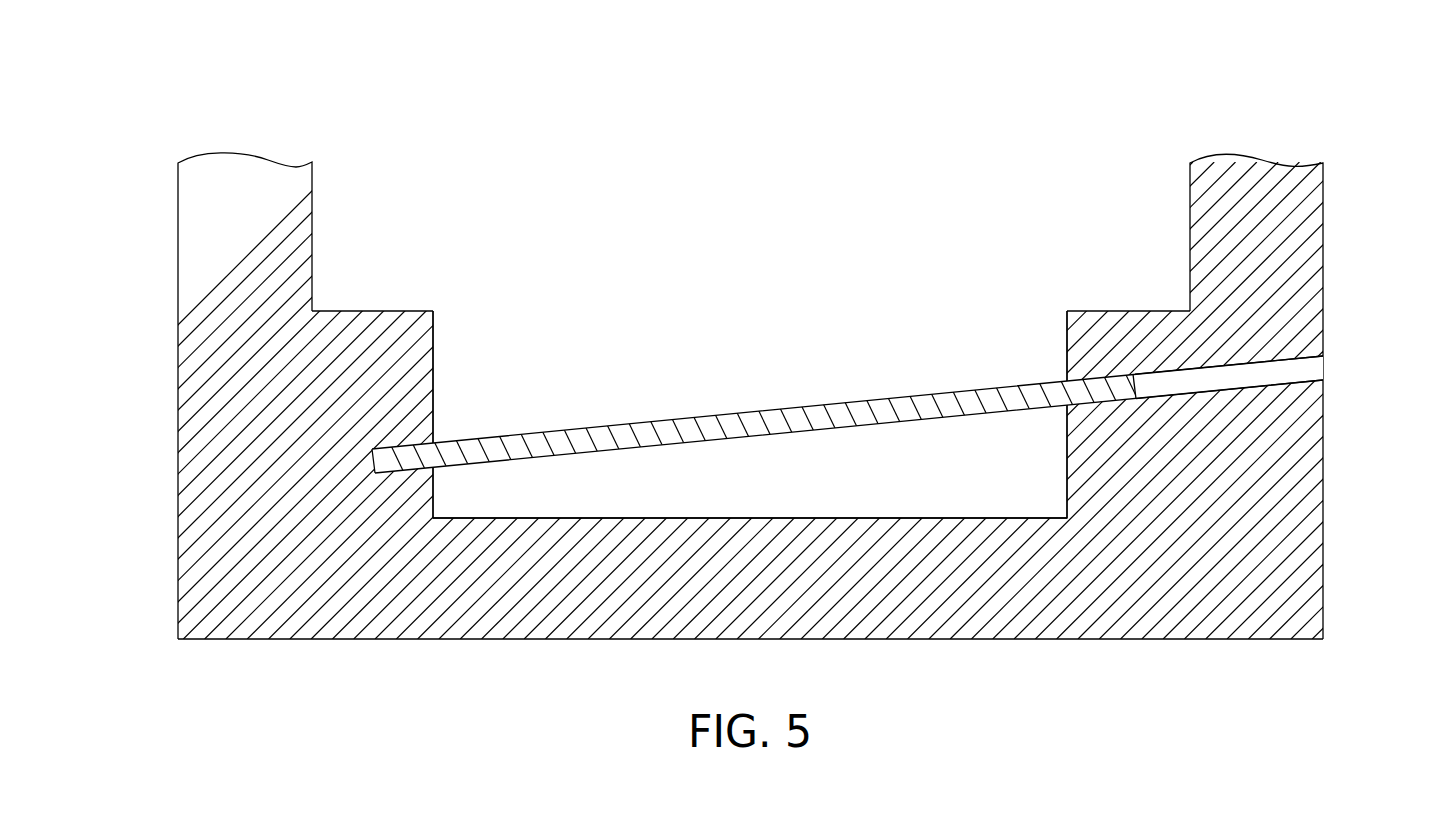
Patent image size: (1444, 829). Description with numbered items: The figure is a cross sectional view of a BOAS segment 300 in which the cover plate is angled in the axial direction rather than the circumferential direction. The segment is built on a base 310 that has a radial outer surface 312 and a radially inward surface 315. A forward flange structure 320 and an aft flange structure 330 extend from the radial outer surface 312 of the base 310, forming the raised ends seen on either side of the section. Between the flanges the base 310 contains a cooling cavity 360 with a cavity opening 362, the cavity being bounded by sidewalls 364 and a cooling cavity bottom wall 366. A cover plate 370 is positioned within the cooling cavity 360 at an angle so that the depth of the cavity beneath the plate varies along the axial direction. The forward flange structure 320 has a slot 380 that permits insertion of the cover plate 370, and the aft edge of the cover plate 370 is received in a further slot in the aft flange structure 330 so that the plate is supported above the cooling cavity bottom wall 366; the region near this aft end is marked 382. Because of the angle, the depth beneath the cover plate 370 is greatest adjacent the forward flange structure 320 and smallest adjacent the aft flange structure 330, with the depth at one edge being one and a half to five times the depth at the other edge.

The BOAS segment 300 is at (722, 382).
The base 310 is at (1331, 623).
The radial outer surface 312 is at (358, 311).
The radial inner surface 315 is at (1108, 641).
The forward flange structure 320 is at (1331, 185).
The aft flange structure 330 is at (172, 185).
The cooling cavity 360 is at (719, 496).
The cavity opening 362 is at (1072, 304).
The sidewalls 364 is at (437, 505).
The cooling cavity bottom wall 366 is at (803, 518).
The cover plate 370 is at (755, 410).
The slot 380 is at (1326, 362).
The free end of beam 382 is at (437, 440).